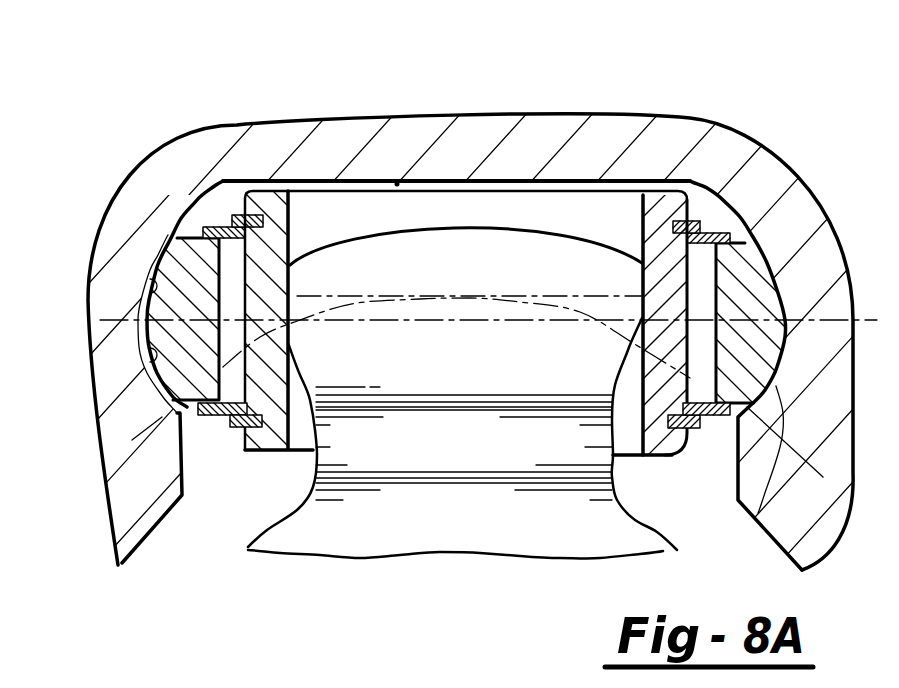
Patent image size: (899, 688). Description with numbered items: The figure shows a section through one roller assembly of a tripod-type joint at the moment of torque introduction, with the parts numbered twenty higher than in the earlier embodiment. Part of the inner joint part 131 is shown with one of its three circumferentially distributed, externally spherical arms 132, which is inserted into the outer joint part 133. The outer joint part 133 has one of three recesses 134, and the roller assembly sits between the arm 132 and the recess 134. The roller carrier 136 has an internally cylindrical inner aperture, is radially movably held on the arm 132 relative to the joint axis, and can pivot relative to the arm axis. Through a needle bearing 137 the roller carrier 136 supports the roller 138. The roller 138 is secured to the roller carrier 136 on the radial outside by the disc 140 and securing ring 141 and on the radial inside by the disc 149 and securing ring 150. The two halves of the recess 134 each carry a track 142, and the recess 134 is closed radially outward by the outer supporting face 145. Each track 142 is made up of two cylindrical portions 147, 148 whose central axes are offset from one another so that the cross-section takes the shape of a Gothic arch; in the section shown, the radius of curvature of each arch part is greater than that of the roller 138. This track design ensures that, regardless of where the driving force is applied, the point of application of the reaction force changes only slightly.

The inner joint part 131 is at (323, 522).
The arm 132 is at (381, 373).
The outer joint part 133 is at (540, 140).
The recess 134 is at (220, 203).
The roller carrier 136 is at (610, 455).
The needle bearing 137 is at (710, 415).
The roller 138 is at (757, 515).
The disc 140 is at (728, 222).
The securing ring 141 is at (692, 220).
The track 142 is at (188, 227).
The outer supporting face 145 is at (397, 183).
The cylindrical portion 147 is at (122, 322).
The cylindrical portion 148 is at (148, 346).
The disc 149 is at (702, 430).
The securing ring 150 is at (695, 430).